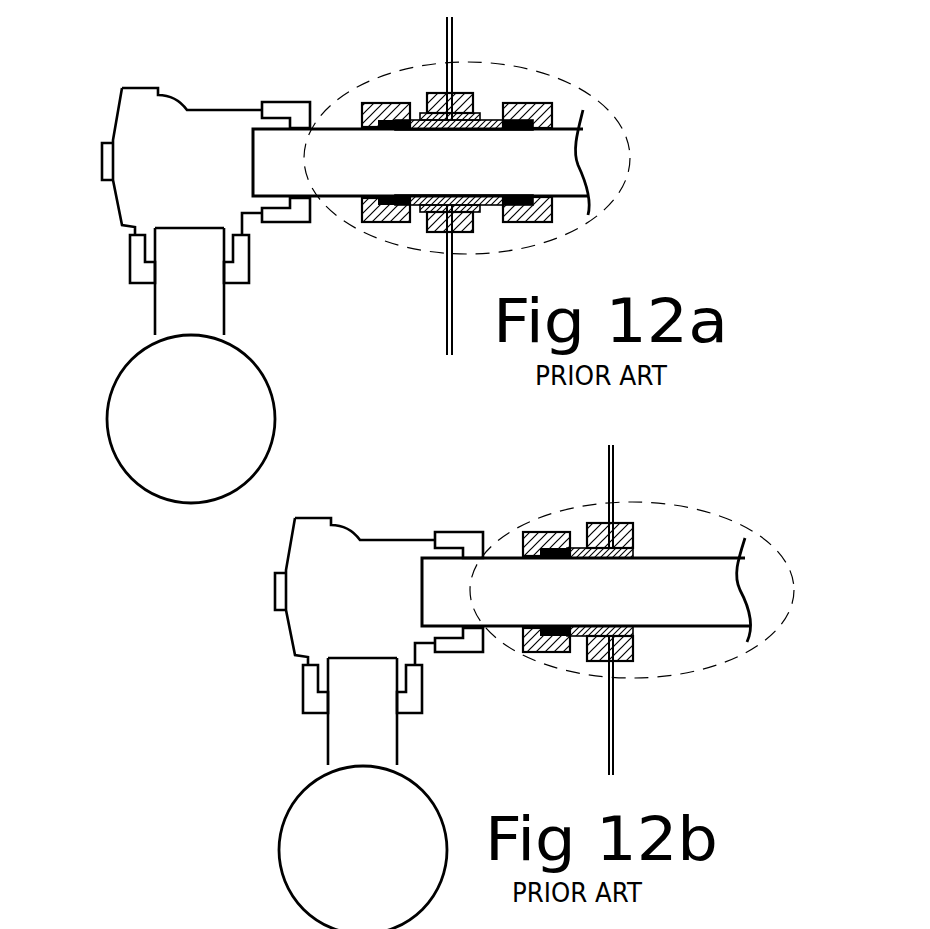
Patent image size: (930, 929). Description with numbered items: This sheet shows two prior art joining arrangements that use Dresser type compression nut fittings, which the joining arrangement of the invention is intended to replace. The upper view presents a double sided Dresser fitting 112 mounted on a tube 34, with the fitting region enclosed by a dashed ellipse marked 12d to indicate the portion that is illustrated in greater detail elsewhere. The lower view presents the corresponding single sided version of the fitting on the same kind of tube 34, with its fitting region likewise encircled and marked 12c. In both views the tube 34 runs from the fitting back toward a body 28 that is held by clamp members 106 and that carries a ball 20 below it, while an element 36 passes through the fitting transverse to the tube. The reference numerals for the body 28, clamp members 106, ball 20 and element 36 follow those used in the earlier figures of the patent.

In FIG. 12A, the ball 20 is at (115, 455).
In FIG. 12B, the ball 20 is at (290, 800).
In FIG. 12A, the housing 28 is at (142, 88).
In FIG. 12B, the housing 28 is at (315, 518).
In FIG. 12A, the tube 34 is at (587, 173).
In FIG. 12B, the tube 34 is at (732, 595).
In FIG. 12A, the wire 36 is at (453, 40).
In FIG. 12B, the wire 36 is at (613, 472).
In FIG. 12A, the clamp 106 is at (283, 102).
In FIG. 12B, the clamp 106 is at (457, 532).
In FIG. 12A, the double sided Dresser fitting 112 is at (553, 212).
In FIG. 12A, the detail region shown in Fig 12d is at (584, 88).
In FIG. 12B, the detail region shown in Fig 12c is at (732, 516).